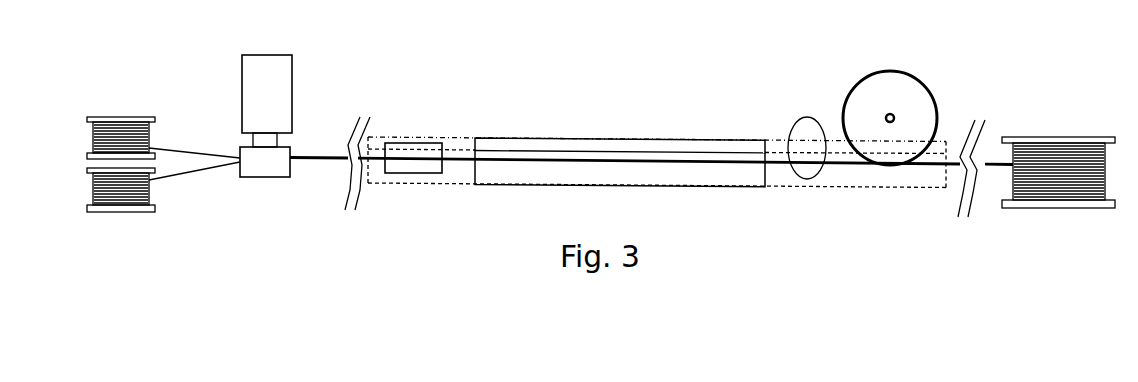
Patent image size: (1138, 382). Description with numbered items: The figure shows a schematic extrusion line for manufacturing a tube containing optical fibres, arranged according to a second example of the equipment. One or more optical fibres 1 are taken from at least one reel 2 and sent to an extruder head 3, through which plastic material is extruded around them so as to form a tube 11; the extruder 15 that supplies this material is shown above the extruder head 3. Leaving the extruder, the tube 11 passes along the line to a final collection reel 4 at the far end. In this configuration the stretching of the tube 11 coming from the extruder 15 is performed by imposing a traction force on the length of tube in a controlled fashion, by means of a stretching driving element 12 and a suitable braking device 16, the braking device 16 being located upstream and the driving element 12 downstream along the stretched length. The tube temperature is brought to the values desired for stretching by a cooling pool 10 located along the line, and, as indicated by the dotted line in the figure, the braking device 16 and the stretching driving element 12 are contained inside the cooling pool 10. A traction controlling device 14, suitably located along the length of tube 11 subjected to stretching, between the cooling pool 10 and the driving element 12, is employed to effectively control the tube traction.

The optical fibre 1 is at (195, 152).
The reel 2 is at (90, 116).
The extruder head 3 is at (275, 168).
The final collection reel 4 is at (1070, 136).
The cooling pool 10 is at (597, 143).
The tube 11 is at (311, 162).
The stretching driving element 12 is at (888, 68).
The traction controlling device 14 is at (809, 118).
The extruder 15 is at (280, 116).
The braking device 16 is at (398, 139).